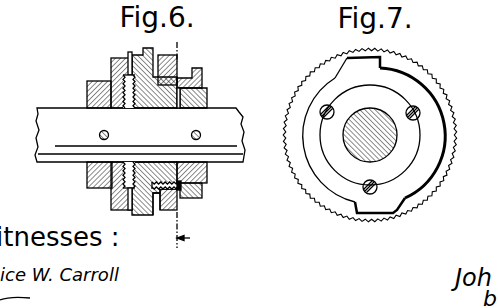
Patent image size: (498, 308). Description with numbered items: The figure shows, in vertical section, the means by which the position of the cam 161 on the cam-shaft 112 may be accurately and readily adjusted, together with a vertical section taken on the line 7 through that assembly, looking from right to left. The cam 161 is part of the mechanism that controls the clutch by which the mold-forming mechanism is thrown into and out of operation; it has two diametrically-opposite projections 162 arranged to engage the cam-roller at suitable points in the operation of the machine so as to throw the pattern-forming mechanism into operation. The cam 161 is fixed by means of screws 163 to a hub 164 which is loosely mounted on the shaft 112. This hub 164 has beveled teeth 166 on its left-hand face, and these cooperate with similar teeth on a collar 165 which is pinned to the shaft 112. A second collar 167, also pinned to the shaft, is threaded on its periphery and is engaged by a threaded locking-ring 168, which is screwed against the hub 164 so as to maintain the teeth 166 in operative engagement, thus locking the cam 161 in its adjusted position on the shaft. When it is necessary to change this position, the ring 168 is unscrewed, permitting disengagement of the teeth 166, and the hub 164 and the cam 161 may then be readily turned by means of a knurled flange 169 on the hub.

In FIG. 6, the section line 7- 7 is at (181, 146).
In FIG. 6, the cam-shaft 112 is at (140, 135).
In FIG. 7, the cam-shaft 112 is at (357, 150).
In FIG. 6, the cam 161 is at (180, 201).
In FIG. 7, the cam 161 is at (415, 101).
In FIG. 6, the projections 162 is at (168, 213).
In FIG. 7, the projections 162 is at (350, 63).
In FIG. 6, the screws 163 is at (200, 186).
In FIG. 7, the screws 163 is at (322, 108).
In FIG. 6, the hub 164 is at (203, 97).
In FIG. 6, the collar 165 is at (108, 81).
In FIG. 6, the beveled teeth 166 is at (131, 58).
In FIG. 6, the second collar 167 is at (203, 172).
In FIG. 6, the threaded locking-ring 168 is at (199, 82).
In FIG. 6, the knurled flange 169 is at (145, 217).
In FIG. 7, the knurled flange 169 is at (447, 172).